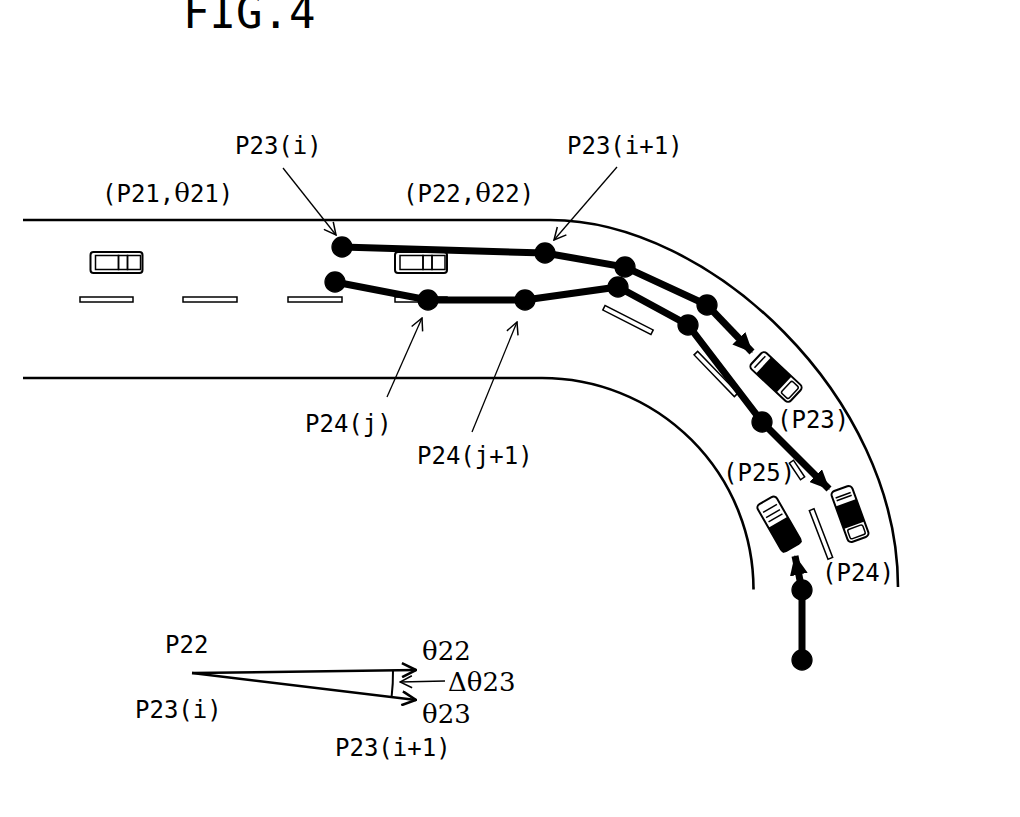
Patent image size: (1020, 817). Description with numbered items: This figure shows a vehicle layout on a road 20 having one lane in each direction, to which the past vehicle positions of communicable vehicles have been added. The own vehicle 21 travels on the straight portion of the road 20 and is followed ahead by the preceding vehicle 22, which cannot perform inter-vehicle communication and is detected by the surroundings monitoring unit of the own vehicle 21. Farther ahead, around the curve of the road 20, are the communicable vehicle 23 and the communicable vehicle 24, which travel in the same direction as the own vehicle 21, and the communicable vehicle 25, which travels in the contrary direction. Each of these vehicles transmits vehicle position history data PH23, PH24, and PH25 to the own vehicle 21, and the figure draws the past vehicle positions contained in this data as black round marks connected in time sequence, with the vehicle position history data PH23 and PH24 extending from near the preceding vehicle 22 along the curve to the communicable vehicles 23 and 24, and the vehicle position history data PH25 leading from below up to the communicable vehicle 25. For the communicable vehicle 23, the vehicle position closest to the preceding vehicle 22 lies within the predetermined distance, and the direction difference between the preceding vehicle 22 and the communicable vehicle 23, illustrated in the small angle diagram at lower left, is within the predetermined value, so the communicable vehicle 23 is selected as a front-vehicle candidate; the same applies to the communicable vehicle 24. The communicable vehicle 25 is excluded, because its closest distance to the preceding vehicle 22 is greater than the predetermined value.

The road 20 is at (650, 238).
The own vehicle 21 is at (115, 258).
The preceding vehicle 22 is at (417, 245).
The communicable vehicle 23 is at (797, 385).
The communicable vehicle 24 is at (855, 493).
The communicable vehicle 25 is at (767, 513).
The vehicle position history data PH23 is at (680, 287).
The vehicle position history data PH24 is at (733, 397).
The vehicle position history data PH25 is at (800, 630).